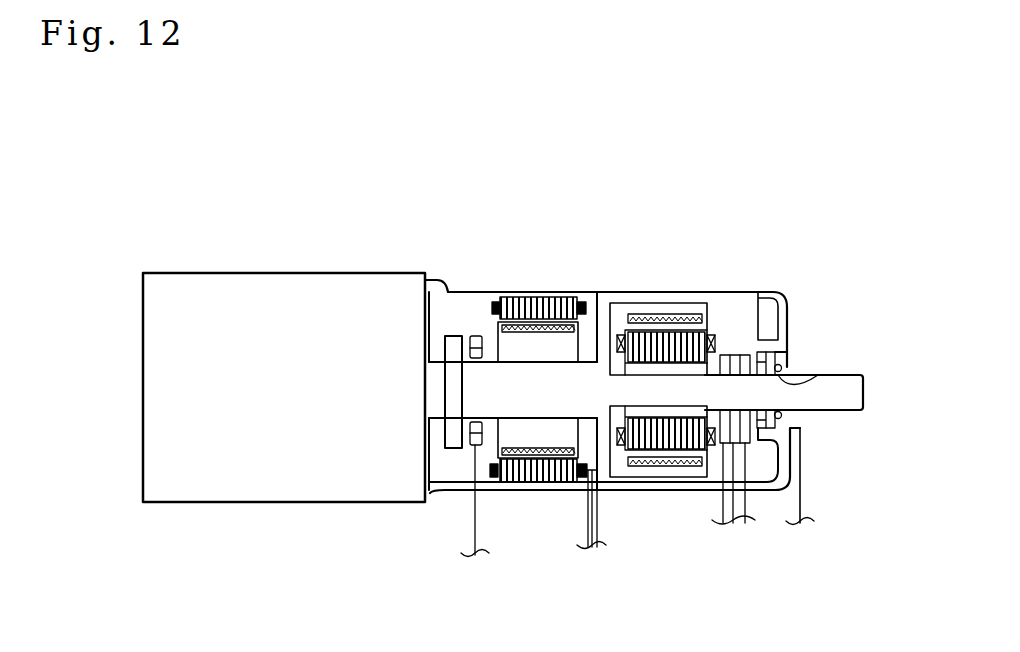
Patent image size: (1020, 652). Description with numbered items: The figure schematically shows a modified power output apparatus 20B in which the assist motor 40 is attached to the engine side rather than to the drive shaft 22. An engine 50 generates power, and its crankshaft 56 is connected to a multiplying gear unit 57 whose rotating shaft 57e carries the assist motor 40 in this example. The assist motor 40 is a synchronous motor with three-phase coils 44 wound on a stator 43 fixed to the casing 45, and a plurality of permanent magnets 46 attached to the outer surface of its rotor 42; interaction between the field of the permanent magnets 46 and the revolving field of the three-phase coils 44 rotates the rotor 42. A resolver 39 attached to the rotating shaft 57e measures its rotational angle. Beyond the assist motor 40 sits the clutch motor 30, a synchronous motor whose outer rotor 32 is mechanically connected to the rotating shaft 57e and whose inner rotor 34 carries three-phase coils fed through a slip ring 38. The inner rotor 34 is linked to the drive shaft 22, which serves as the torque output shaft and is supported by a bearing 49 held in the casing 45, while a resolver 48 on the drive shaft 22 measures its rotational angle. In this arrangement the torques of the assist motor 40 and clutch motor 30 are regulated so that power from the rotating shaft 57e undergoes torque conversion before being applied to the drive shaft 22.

The power output apparatus 20B is at (634, 164).
The drive shaft 22 is at (846, 408).
The clutch motor 30 is at (742, 351).
The outer rotor 32 is at (683, 302).
The inner rotor 34 is at (735, 355).
The slip ring 38 is at (742, 300).
The resolver 39 is at (477, 336).
The assist motor 40 is at (536, 367).
The rotor 42 is at (572, 343).
The stator 43 is at (552, 290).
The three-phase coils 44 is at (495, 300).
The casing 45 is at (775, 292).
The permanent magnets 46 is at (563, 458).
The resolver 48 is at (781, 352).
The bearing 49 is at (818, 373).
The engine 50 is at (313, 272).
The crankshaft 56 is at (436, 357).
The multiplying gear unit 57 is at (453, 336).
The rotating shaft 57e is at (543, 410).